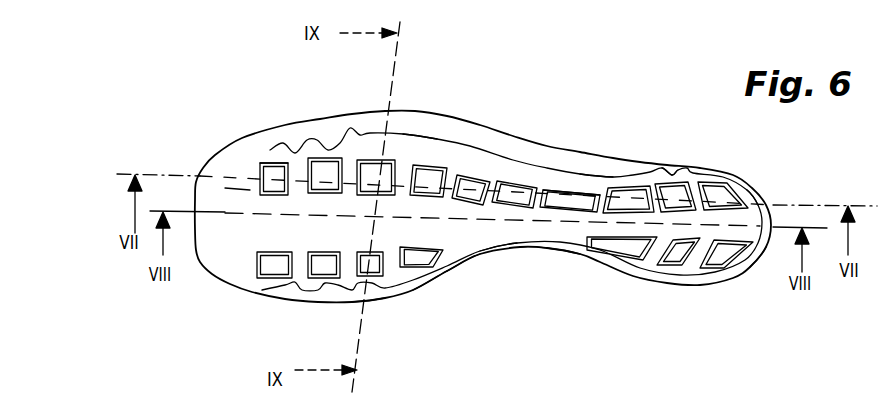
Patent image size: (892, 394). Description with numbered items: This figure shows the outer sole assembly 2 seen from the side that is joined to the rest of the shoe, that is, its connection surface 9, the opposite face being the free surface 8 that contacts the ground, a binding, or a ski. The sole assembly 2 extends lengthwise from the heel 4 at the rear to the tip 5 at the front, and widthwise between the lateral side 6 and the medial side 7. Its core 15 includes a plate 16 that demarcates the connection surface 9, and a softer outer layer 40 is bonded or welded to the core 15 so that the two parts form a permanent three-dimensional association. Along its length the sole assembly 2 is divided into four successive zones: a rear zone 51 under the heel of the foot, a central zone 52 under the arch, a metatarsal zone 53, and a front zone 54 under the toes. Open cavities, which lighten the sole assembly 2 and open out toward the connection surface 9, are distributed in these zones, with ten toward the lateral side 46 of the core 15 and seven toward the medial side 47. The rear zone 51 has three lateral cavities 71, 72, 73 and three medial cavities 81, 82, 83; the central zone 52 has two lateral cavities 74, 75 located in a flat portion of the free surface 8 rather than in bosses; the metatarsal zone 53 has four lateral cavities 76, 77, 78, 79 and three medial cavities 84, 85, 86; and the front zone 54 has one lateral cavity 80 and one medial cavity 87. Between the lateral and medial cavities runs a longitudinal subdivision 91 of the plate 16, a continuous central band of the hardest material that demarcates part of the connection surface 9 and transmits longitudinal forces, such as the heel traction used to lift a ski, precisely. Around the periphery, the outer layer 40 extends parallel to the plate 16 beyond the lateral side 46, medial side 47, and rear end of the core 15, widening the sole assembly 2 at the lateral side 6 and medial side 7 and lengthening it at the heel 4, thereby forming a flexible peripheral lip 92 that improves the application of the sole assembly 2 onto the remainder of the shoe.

The outer sole assembly 2 is at (656, 110).
The heel 4 is at (770, 246).
The tip 5 is at (193, 199).
The lateral side 6 is at (523, 170).
The medial side 7 is at (482, 258).
The free surface 8 is at (587, 196).
The connection surface 9 is at (526, 196).
The core 15 is at (239, 182).
The plate 16 is at (235, 255).
The outer layer 40 is at (583, 254).
The lateral side of the core 46 is at (635, 194).
The medial side of the core 47 is at (515, 244).
The rear zone 51 is at (680, 200).
The central zone 52 is at (543, 250).
The metatarsal zone 53 is at (376, 230).
The front zone 54 is at (264, 162).
The lateral cavity 71 is at (753, 180).
The lateral cavity 72 is at (735, 188).
The lateral cavity 73 is at (680, 168).
The lateral cavity 74 is at (603, 164).
The lateral cavity 75 is at (548, 190).
The lateral cavity 76 is at (481, 182).
The lateral cavity 77 is at (432, 172).
The lateral cavity 78 is at (410, 128).
The lateral cavity 79 is at (325, 168).
The lateral cavity 80 is at (278, 175).
The medial cavity 81 is at (723, 260).
The medial cavity 82 is at (682, 260).
The medial cavity 83 is at (636, 254).
The medial cavity 84 is at (435, 268).
The medial cavity 85 is at (365, 272).
The medial cavity 86 is at (318, 270).
The medial cavity 87 is at (268, 268).
The longitudinal subdivision 91 is at (381, 295).
The peripheral lip 92 is at (455, 266).